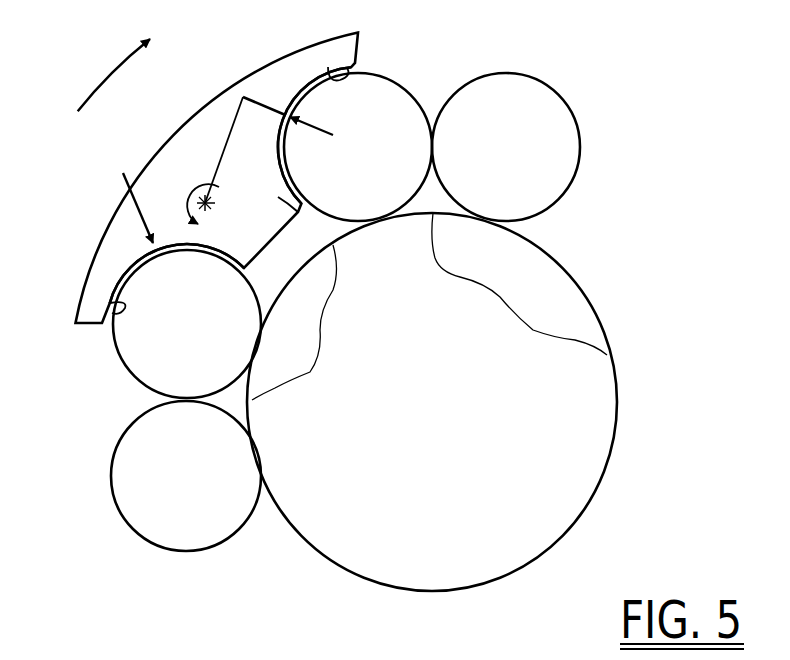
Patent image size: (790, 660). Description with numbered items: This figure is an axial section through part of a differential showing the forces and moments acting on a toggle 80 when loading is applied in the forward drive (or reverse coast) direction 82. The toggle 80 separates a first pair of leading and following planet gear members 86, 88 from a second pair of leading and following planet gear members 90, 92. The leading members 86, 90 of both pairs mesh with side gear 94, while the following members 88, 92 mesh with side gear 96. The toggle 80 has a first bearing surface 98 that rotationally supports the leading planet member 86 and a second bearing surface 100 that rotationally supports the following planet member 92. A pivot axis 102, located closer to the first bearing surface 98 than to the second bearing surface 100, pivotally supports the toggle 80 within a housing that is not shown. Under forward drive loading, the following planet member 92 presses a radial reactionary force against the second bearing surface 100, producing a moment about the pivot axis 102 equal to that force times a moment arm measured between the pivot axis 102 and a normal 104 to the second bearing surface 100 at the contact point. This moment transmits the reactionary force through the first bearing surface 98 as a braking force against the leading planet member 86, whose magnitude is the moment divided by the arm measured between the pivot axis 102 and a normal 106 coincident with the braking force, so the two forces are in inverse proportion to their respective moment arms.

The toggle 80 is at (335, 248).
The forward drive direction 82 is at (128, 54).
The leading planet gear member 86 is at (119, 356).
The following planet gear member 88 is at (130, 524).
The leading planet gear member 90 is at (556, 89).
The following planet gear member 92 is at (406, 89).
The side gear 94 is at (598, 335).
The side gear 96 is at (492, 546).
The first bearing surface 98 is at (110, 303).
The second bearing surface 100 is at (328, 67).
The pivot axis 102 is at (214, 205).
The normal to the second bearing surface 104 is at (265, 104).
The normal coincident to the braking force 106 is at (153, 175).